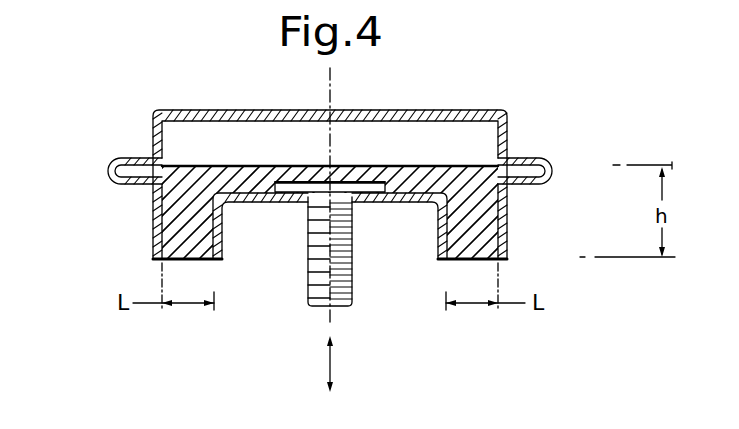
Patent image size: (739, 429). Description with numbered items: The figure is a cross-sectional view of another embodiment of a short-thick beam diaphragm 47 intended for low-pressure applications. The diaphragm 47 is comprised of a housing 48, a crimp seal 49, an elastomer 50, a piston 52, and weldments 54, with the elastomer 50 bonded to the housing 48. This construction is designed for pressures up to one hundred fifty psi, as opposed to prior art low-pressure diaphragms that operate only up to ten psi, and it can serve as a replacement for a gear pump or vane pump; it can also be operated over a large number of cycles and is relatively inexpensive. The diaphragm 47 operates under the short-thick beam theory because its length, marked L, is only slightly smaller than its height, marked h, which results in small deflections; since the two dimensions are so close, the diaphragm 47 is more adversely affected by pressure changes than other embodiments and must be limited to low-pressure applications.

The diaphragm 47 is at (512, 86).
The housing 48 is at (153, 121).
The crimp seal 49 is at (112, 173).
The elastomer 50 is at (188, 247).
The piston 52 is at (350, 306).
The weldments 54 is at (283, 193).